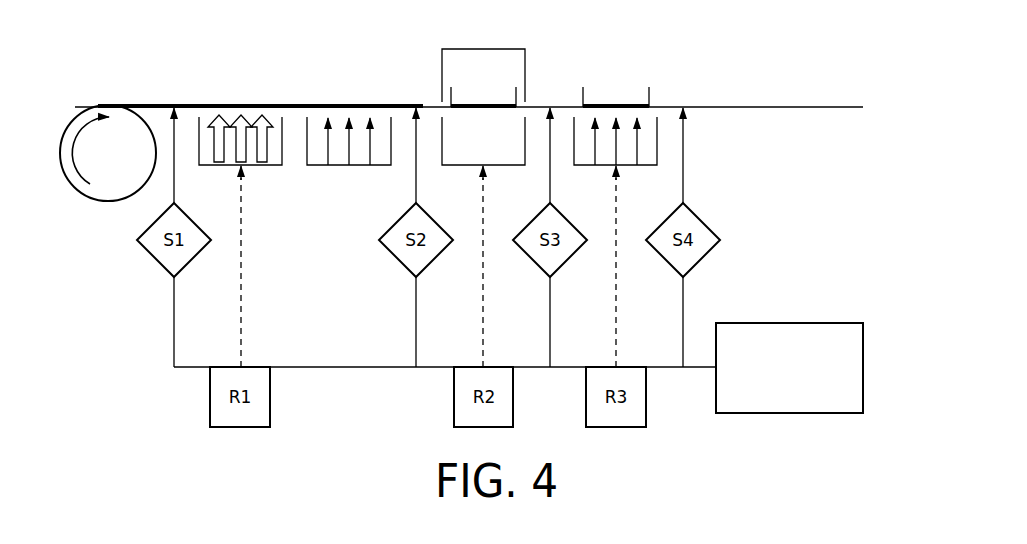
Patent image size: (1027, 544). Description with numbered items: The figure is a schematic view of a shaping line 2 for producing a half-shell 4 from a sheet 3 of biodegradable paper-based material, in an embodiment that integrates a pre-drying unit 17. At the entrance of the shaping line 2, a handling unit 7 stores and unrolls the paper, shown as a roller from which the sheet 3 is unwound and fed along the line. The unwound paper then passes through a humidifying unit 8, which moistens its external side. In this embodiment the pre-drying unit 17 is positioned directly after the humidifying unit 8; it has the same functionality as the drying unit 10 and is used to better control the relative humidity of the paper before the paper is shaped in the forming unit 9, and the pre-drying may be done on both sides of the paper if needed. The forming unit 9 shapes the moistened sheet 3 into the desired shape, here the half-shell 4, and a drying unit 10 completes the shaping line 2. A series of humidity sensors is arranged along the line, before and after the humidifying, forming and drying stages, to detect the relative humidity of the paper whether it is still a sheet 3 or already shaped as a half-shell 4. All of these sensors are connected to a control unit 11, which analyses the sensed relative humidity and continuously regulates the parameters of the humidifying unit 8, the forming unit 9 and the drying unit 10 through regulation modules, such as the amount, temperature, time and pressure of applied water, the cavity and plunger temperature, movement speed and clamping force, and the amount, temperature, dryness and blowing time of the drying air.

The shaping line 2 is at (918, 74).
The sheet 3 is at (155, 105).
The half-shell 4 is at (649, 98).
The handling unit 7 is at (66, 126).
The humidifying unit 8 is at (208, 165).
The forming unit 9 is at (442, 77).
The drying unit 10 is at (652, 165).
The control unit 11 is at (863, 367).
The pre-drying unit 17 is at (320, 165).